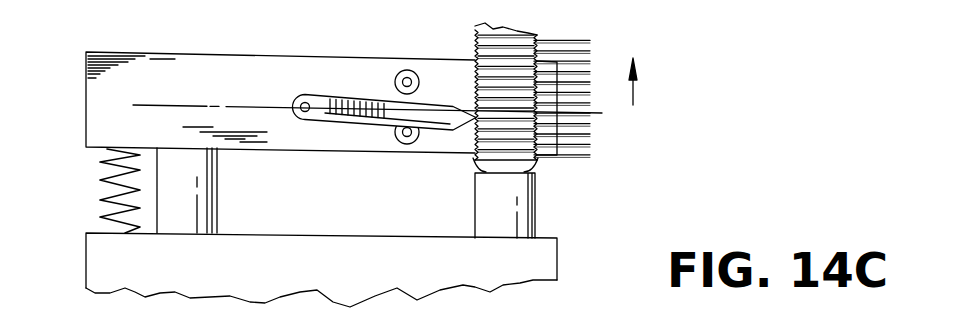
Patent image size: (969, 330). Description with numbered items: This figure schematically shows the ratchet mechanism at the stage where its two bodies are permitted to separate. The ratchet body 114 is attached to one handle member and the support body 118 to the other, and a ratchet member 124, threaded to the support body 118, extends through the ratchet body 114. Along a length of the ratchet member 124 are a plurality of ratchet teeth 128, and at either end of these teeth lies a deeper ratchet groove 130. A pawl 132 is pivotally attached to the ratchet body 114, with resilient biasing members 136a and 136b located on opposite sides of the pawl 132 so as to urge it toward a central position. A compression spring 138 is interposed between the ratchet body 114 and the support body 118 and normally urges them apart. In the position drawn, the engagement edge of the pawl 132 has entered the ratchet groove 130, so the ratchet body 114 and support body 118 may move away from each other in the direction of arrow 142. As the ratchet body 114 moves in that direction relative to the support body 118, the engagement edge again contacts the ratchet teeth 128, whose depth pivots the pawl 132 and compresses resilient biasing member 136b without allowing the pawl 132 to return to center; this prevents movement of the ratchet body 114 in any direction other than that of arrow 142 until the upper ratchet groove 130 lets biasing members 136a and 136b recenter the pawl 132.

The ratchet body 114 is at (218, 64).
The support body 118 is at (543, 263).
The ratchet member 124 is at (523, 215).
The ratchet teeth 128 is at (538, 50).
The ratchet groove 130 is at (530, 163).
The pawl 132 is at (323, 98).
The resilient biasing member 136a is at (407, 69).
The resilient biasing member 136b is at (407, 146).
The compression spring 138 is at (103, 203).
The arrow 142 is at (635, 97).